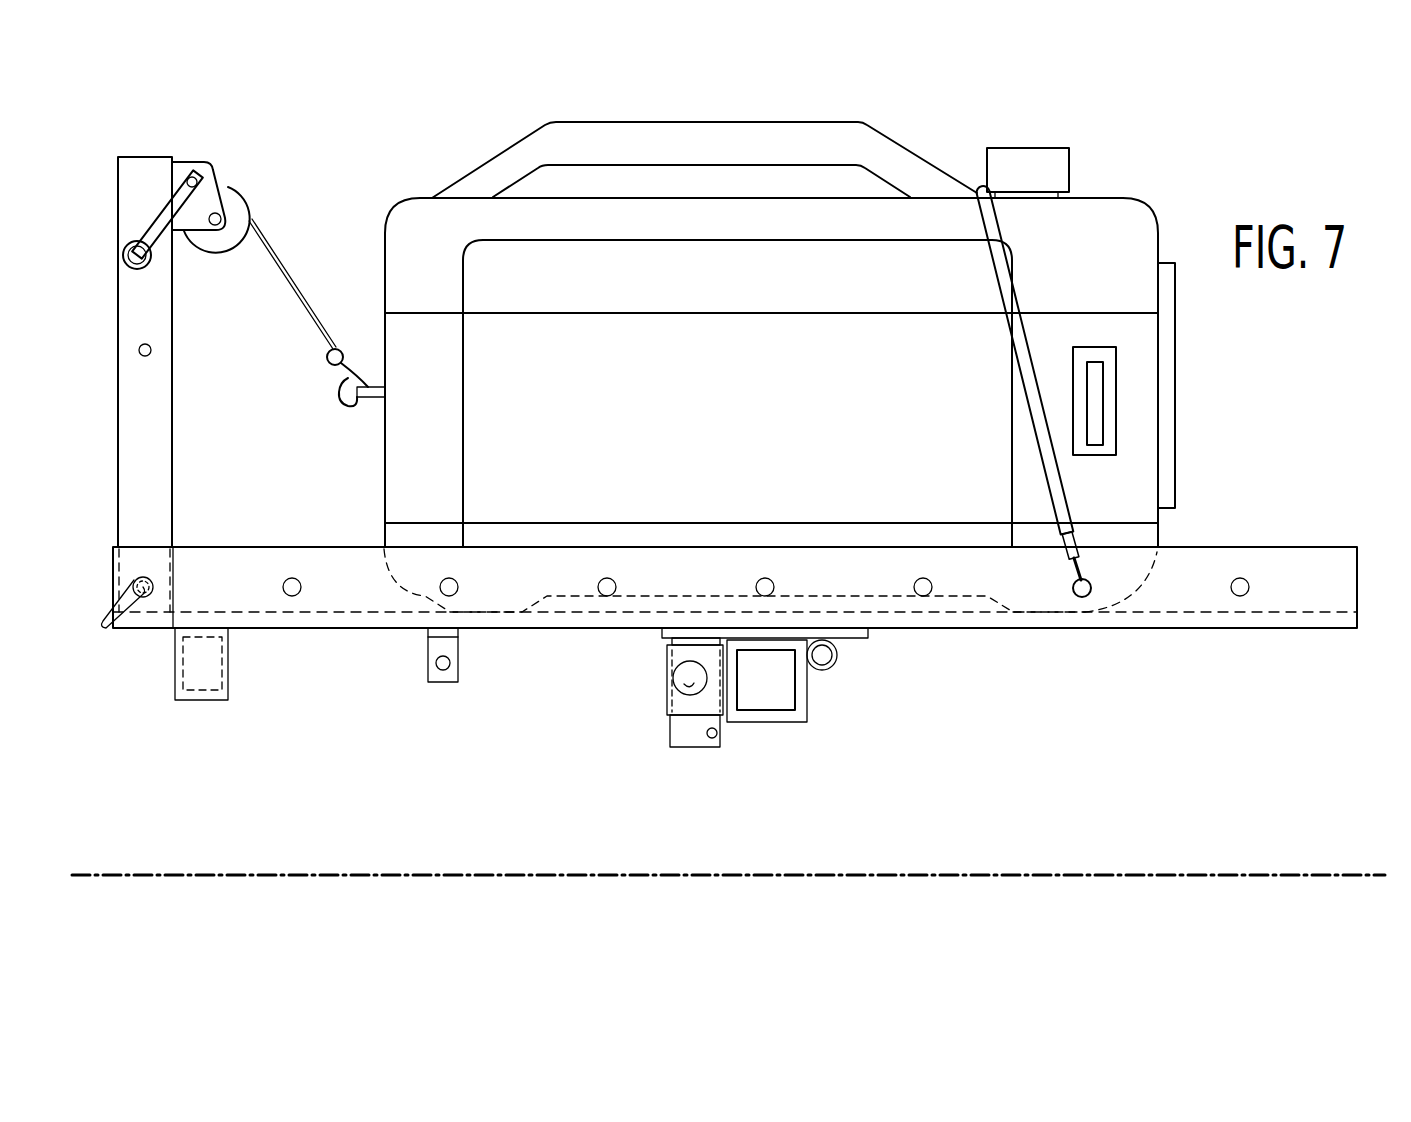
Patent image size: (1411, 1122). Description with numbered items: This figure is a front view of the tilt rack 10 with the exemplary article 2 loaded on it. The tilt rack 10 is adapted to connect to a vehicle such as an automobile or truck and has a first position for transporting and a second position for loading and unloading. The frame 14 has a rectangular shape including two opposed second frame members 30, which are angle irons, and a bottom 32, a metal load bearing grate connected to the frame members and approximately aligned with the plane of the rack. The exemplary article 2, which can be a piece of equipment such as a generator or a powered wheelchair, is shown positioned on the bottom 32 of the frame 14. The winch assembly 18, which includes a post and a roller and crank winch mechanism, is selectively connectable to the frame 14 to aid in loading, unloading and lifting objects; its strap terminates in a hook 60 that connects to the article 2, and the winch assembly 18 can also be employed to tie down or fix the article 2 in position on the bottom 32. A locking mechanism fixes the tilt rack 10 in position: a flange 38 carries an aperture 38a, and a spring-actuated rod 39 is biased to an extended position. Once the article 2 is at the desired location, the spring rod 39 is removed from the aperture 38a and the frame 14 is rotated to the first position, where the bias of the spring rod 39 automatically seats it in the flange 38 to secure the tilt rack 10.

The exemplary article 2 is at (605, 399).
The tilt rack 10 is at (262, 113).
The frame 14 is at (1360, 590).
The winch assembly 18 is at (118, 205).
The second frame members 30 is at (352, 558).
The bottom 32 is at (1145, 612).
The flange 38 is at (670, 736).
The aperture 38a is at (718, 738).
The spring-actuated rod 39 is at (676, 690).
The hook 60 is at (346, 399).